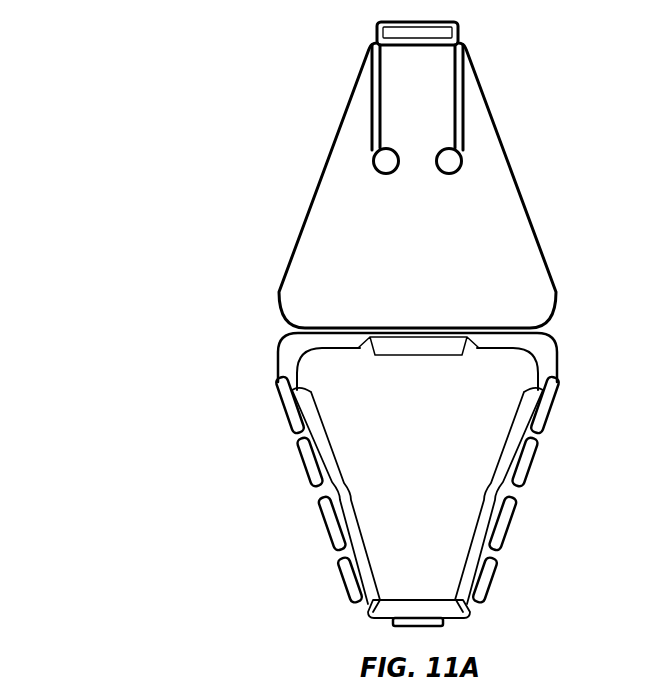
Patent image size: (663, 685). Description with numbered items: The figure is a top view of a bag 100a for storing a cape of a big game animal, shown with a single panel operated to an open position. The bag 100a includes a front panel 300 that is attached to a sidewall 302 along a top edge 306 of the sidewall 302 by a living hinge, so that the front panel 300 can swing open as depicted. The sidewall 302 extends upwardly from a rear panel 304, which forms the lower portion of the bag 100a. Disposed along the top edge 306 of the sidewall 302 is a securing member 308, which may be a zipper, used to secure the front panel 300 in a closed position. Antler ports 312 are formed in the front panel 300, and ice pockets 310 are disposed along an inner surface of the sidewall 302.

The bag 100a is at (139, 351).
The front panel 300 is at (517, 242).
The sidewall 302 is at (555, 348).
The rear panel 304 is at (403, 522).
The top edge 306 is at (345, 327).
The securing member 308 is at (280, 363).
The ice pockets 310 is at (515, 433).
The antler ports 312 is at (388, 160).